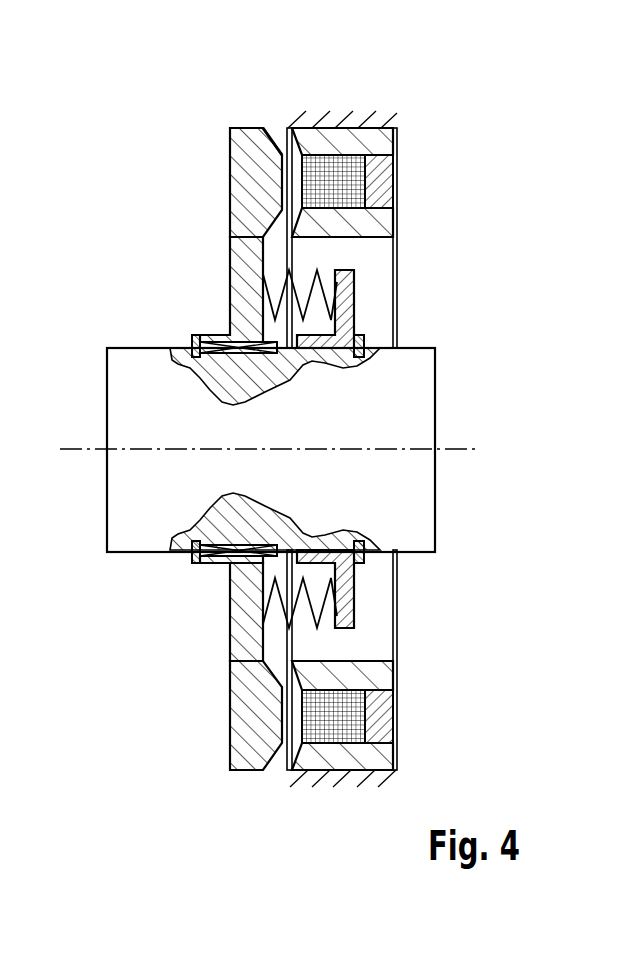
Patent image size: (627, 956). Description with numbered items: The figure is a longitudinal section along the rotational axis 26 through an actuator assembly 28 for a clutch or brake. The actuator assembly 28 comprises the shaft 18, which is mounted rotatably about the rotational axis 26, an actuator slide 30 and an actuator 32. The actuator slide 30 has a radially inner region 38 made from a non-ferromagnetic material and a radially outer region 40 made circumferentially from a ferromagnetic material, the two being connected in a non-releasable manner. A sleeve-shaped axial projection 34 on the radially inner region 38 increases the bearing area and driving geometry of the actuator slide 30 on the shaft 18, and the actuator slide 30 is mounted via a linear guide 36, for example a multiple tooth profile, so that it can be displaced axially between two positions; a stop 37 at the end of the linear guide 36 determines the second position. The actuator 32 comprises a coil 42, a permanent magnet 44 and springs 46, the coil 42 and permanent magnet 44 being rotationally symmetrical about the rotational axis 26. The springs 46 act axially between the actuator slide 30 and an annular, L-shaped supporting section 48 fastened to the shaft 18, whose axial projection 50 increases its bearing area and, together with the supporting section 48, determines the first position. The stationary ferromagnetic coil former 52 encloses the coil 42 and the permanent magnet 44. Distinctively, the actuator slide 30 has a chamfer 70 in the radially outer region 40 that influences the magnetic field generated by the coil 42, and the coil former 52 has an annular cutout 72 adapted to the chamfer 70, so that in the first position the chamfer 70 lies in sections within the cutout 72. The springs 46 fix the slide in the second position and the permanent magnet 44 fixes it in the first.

The shaft 18 is at (118, 378).
The rotational axis 26 is at (80, 450).
The actuator assembly 28 is at (380, 82).
The actuator slide 30 is at (202, 398).
The actuator 32 is at (452, 263).
The axial projection 34 is at (205, 570).
The linear guide 36 is at (220, 343).
The stop 37 is at (190, 340).
The radially inner region 38 is at (243, 630).
The radially outer region 40 is at (242, 128).
The coil 42 is at (357, 182).
The permanent magnet 44 is at (383, 192).
The springs 46 is at (343, 290).
The supporting section 48 is at (345, 598).
The axial projection 50 is at (320, 537).
The coil former 52 is at (386, 753).
The chamfer 70 is at (274, 126).
The annular cutout 72 is at (293, 132).